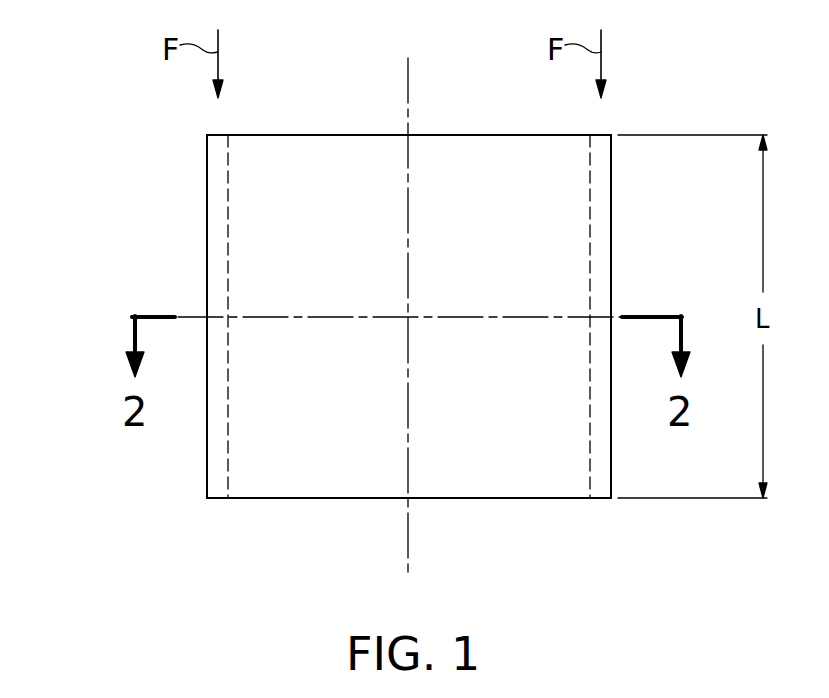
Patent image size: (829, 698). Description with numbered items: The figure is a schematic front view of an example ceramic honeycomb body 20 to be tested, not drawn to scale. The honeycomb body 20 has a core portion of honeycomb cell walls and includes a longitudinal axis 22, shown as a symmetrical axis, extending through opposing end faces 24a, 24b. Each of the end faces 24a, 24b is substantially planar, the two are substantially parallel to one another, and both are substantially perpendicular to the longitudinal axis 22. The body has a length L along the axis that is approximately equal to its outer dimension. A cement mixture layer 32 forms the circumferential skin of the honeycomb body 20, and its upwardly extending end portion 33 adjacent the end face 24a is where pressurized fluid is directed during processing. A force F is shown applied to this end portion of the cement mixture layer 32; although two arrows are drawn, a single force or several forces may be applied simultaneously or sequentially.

The honeycomb body 20 is at (157, 230).
The longitudinal axis 22 is at (407, 247).
The end face 24a is at (465, 134).
The end face 24b is at (520, 499).
The cement mixture layer 32 is at (603, 237).
The upwardly extending end portion 33 is at (217, 135).